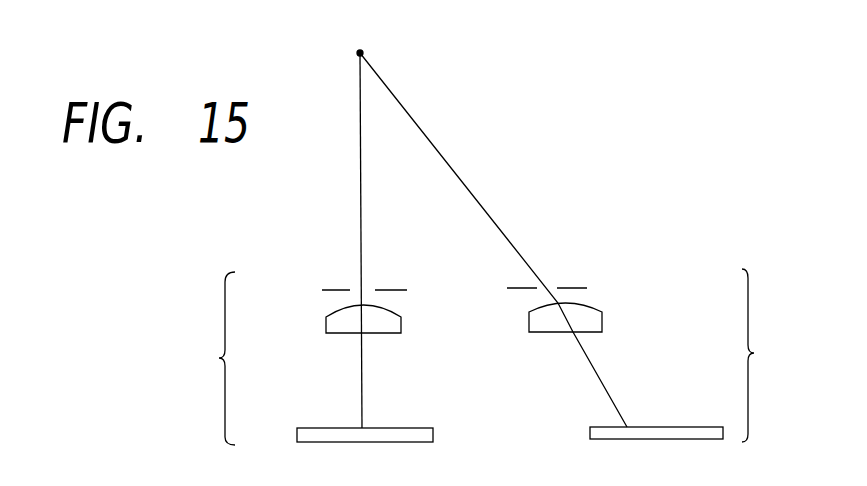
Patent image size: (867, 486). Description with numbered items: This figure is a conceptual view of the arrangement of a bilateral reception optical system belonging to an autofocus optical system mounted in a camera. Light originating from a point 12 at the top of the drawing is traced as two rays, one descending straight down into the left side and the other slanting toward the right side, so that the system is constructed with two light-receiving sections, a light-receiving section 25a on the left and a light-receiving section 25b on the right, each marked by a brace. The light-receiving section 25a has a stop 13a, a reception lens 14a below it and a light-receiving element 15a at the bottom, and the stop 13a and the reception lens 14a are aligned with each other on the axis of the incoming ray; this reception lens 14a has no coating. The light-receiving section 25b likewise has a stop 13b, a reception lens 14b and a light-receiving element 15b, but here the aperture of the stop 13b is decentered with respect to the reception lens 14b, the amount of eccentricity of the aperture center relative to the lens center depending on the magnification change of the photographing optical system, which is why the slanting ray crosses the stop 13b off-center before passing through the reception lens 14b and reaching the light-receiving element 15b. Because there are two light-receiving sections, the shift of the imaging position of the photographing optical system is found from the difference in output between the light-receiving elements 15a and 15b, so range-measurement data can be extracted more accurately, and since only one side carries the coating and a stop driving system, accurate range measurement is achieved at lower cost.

The light source 12 is at (361, 53).
The stop 13a is at (337, 288).
The reception lens 14a is at (328, 327).
The light-receiving element 15a is at (328, 427).
The light-receiving section 25a is at (197, 358).
The stop 13b is at (578, 288).
The reception lens 14b is at (602, 322).
The light-receiving element 15b is at (680, 427).
The light-receiving section 25b is at (777, 355).